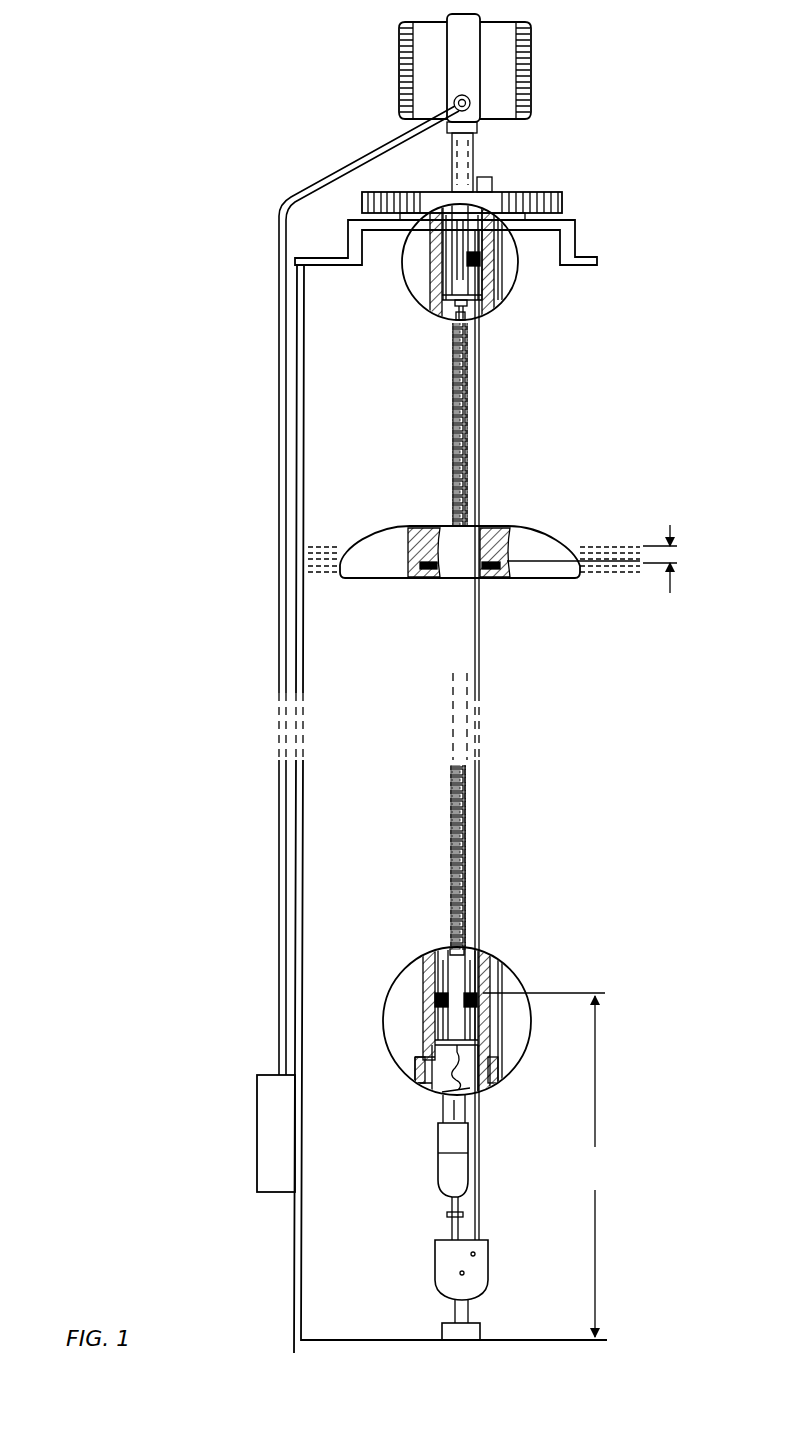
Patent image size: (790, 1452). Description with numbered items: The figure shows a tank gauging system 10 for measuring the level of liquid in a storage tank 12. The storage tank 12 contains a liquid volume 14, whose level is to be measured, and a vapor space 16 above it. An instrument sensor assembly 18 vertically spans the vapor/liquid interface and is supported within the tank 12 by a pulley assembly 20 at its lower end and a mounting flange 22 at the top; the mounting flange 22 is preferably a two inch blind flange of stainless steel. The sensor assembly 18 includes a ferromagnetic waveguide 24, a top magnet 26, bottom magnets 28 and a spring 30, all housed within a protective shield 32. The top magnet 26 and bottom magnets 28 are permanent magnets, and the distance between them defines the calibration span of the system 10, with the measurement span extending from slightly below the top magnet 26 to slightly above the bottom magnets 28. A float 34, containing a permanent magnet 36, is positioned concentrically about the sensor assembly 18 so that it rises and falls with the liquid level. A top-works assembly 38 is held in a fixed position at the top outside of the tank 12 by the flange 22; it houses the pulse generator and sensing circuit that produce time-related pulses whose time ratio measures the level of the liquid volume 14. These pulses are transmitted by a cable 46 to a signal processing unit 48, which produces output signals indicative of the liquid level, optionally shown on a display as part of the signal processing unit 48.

The tank gauging system 10 is at (288, 106).
The storage tank 12 is at (298, 397).
The liquid volume 14 is at (380, 748).
The vapor space 16 is at (386, 398).
The instrument sensor assembly 18 is at (486, 812).
The pulley assembly 20 is at (428, 1181).
The mounting flange 22 is at (557, 193).
The ferromagnetic waveguide 24 is at (465, 418).
The top magnet 26 is at (495, 262).
The bottom magnets 28 is at (492, 958).
The spring 30 is at (438, 1096).
The protective shield 32 is at (449, 832).
The float 34 is at (575, 580).
The permanent magnet 36 is at (428, 580).
The top-works assembly 38 is at (397, 68).
The cable 46 is at (278, 848).
The signal processing unit 48 is at (245, 1136).